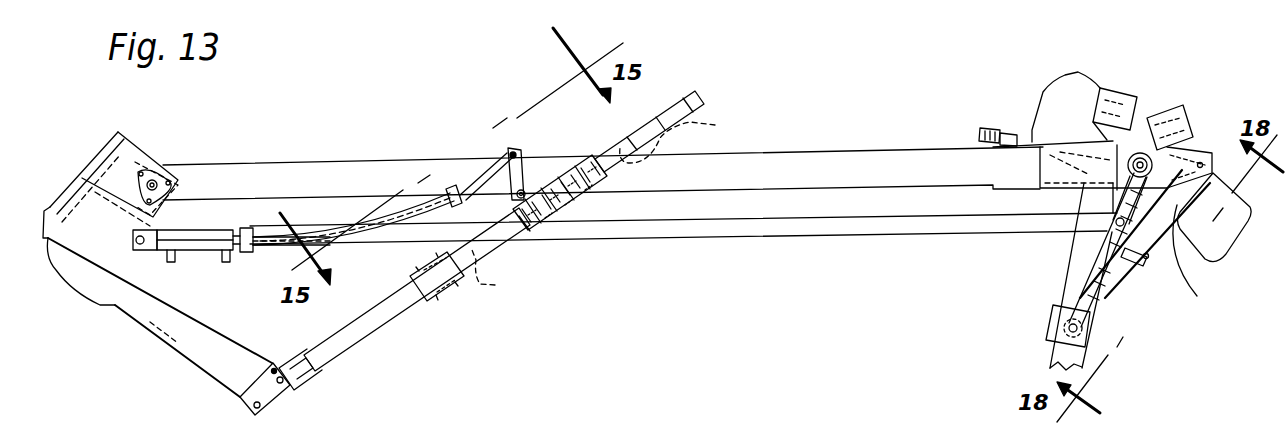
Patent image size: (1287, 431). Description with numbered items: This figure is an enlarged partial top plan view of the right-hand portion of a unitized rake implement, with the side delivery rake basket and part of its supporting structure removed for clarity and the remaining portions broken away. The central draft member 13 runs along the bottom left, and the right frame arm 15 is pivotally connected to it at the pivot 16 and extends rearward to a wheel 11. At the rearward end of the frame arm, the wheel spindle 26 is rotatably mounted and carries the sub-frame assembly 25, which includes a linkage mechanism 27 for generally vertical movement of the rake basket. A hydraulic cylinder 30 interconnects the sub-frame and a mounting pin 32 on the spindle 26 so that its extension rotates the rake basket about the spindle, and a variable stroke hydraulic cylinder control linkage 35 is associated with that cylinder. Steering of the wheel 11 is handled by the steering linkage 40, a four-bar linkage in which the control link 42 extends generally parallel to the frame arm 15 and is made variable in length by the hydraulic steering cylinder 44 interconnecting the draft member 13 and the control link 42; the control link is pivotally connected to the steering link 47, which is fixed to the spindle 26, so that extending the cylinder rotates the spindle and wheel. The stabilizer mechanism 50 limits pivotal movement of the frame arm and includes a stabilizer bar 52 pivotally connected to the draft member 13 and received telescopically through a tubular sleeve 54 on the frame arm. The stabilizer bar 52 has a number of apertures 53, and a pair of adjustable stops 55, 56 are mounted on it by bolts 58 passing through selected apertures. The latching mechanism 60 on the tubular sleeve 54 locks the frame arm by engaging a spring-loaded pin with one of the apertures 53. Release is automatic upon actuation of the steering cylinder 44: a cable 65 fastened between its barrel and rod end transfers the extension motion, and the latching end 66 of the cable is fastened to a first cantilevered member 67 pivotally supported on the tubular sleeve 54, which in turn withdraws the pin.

The wheel 11 is at (1045, 100).
The central draft member 13 is at (160, 318).
The right frame arm 15 is at (228, 165).
The pivot 16 is at (158, 170).
The sub-frame assembly 25 is at (1068, 270).
The wheel spindle 26 is at (1143, 150).
The linkage mechanism 27 is at (990, 130).
The hydraulic cylinder 30 is at (1200, 258).
The mounting pin 32 is at (1201, 160).
The variable stroke hydraulic cylinder control linkage 35 is at (1105, 305).
The steering linkage 40 is at (587, 316).
The control link 42 is at (822, 233).
The hydraulic steering cylinder 44 is at (200, 247).
The steering link 47 is at (1170, 272).
The stabilizer mechanism 50 is at (384, 371).
The stabilizer bar 52 is at (704, 97).
The apertures 53 is at (608, 206).
The tubular sleeve 54 is at (545, 226).
The adjustable stop 55 is at (417, 300).
The adjustable stop 56 is at (594, 162).
The bolts 58 is at (412, 270).
The latching mechanism 60 is at (465, 90).
The cable 65 is at (186, 232).
The latching end 66 is at (480, 170).
The first cantilevered member 67 is at (510, 148).